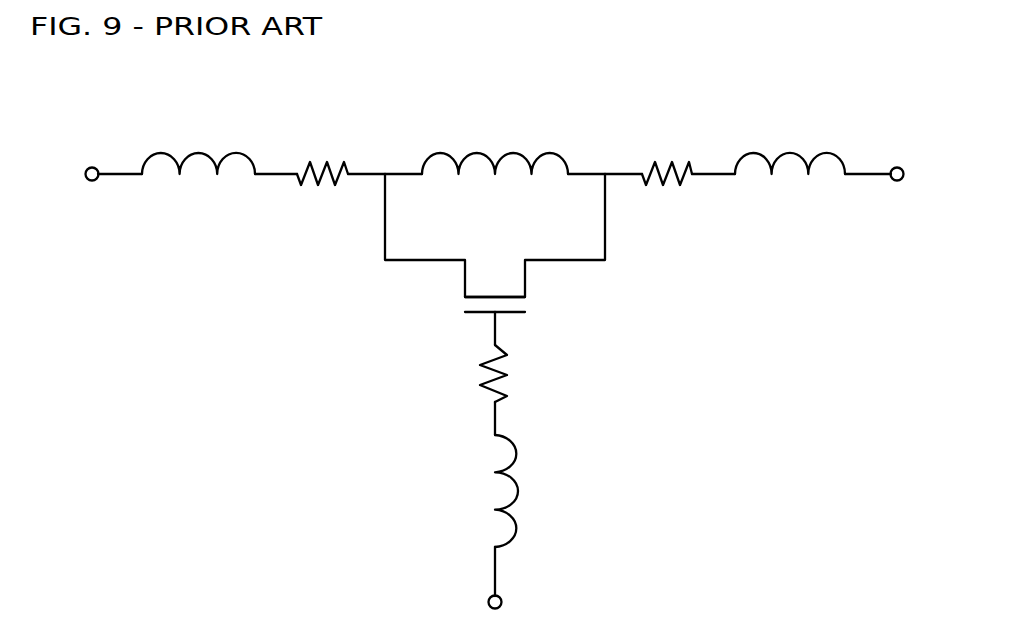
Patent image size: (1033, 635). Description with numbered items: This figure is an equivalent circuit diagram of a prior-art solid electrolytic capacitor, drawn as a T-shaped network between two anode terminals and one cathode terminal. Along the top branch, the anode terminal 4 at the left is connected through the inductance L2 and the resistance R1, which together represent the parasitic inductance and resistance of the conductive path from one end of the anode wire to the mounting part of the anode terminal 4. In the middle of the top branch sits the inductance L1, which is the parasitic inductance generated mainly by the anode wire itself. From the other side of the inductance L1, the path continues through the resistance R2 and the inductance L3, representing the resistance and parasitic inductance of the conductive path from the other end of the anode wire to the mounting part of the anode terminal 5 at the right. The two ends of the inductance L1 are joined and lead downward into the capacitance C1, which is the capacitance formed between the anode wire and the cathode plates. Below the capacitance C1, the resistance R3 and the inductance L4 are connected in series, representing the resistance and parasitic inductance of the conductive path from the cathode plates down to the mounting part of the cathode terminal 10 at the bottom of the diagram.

The anode terminal 4 is at (92, 164).
The anode terminal 5 is at (897, 163).
The cathode terminal 10 is at (502, 600).
The inductance L1 is at (495, 142).
The inductance L2 is at (198, 145).
The inductance L3 is at (790, 143).
The inductance L4 is at (529, 491).
The resistance R1 is at (323, 151).
The resistance R2 is at (667, 152).
The resistance R3 is at (524, 373).
The capacitance C1 is at (518, 307).